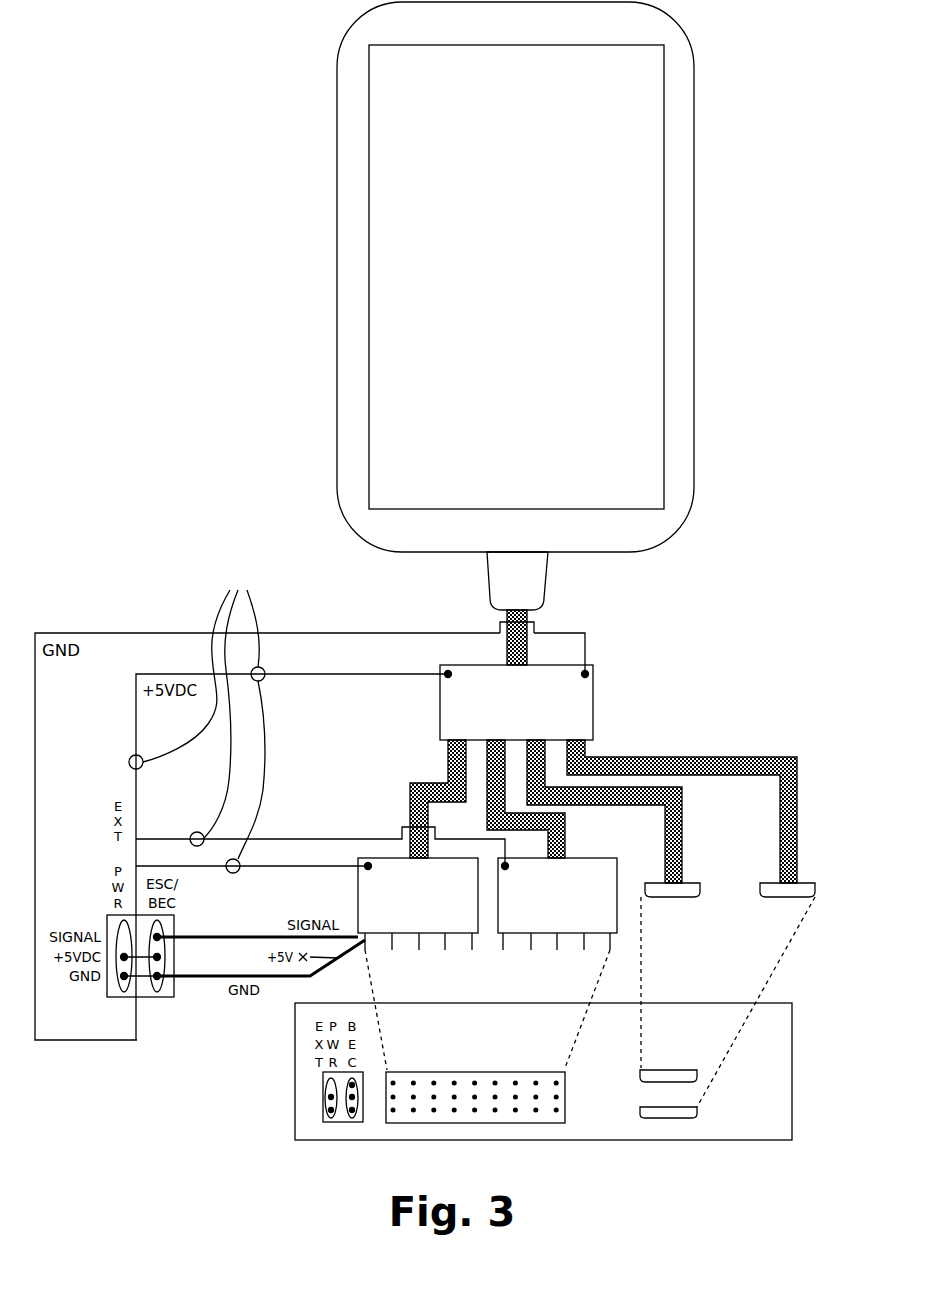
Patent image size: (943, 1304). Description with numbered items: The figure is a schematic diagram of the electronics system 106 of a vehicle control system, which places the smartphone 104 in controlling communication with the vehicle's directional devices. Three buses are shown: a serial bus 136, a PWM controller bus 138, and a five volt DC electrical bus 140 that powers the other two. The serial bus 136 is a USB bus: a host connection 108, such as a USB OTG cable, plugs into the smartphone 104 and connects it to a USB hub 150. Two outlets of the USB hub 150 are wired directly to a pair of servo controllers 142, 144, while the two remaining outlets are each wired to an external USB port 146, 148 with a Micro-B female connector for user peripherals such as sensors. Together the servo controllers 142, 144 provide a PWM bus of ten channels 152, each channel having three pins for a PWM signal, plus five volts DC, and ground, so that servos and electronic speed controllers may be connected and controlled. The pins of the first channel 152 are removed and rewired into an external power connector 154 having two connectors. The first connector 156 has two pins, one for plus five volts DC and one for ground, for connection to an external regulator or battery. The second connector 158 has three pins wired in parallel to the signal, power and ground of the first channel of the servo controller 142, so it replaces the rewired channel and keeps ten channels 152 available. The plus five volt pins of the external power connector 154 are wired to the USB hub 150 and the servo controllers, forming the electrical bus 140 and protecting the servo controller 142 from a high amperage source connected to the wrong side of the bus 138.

The smartphone 104 is at (648, 331).
The electronics system 106 is at (175, 507).
The host connection 108 is at (523, 589).
The serial bus 136 is at (820, 873).
The PWM controller bus 138 is at (385, 1145).
The 5V DC electrical bus 140 is at (197, 721).
The first servo controller 142 is at (418, 895).
The second servo controller 144 is at (557, 895).
The first USB port 146 is at (672, 897).
The second USB port 148 is at (775, 897).
The USB hub 150 is at (516, 702).
The PWM channels 152 is at (482, 964).
The external power connector 154 is at (150, 1014).
The first connector 156 is at (122, 997).
The second connector 158 is at (159, 996).